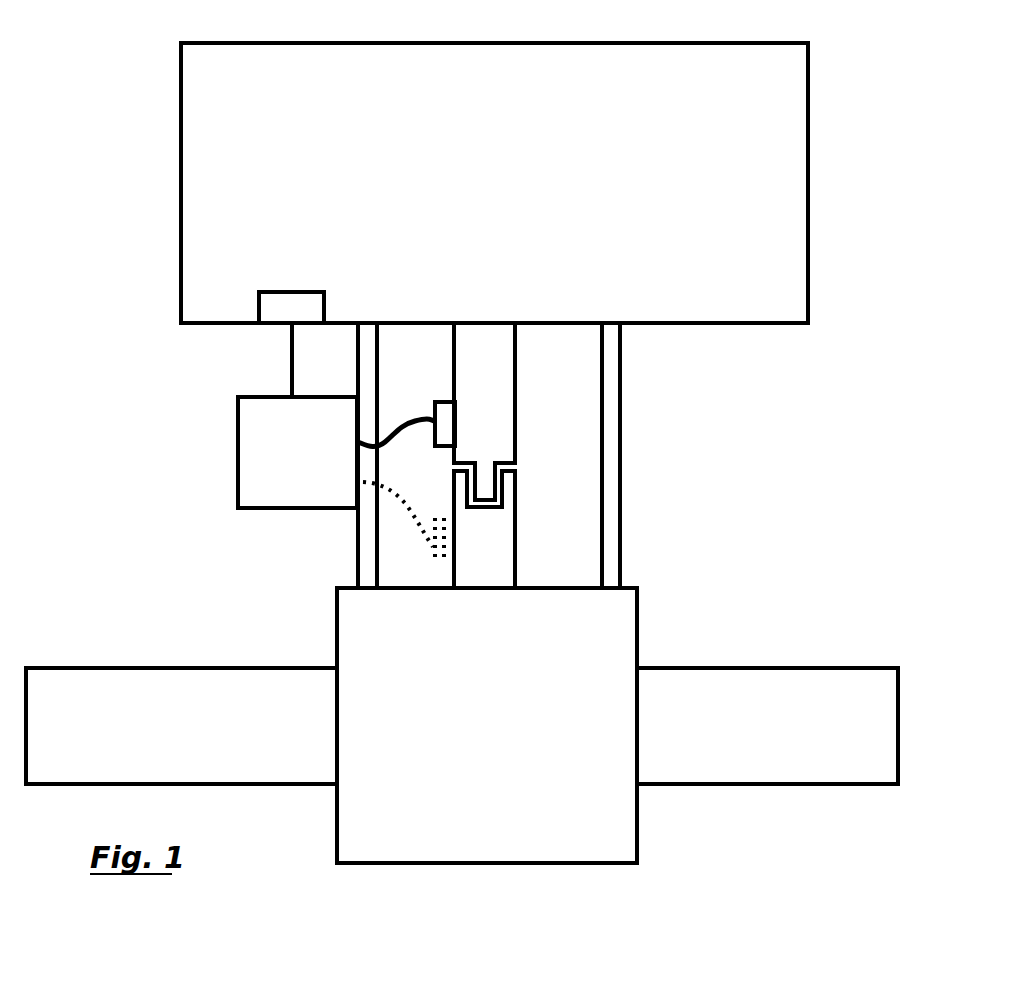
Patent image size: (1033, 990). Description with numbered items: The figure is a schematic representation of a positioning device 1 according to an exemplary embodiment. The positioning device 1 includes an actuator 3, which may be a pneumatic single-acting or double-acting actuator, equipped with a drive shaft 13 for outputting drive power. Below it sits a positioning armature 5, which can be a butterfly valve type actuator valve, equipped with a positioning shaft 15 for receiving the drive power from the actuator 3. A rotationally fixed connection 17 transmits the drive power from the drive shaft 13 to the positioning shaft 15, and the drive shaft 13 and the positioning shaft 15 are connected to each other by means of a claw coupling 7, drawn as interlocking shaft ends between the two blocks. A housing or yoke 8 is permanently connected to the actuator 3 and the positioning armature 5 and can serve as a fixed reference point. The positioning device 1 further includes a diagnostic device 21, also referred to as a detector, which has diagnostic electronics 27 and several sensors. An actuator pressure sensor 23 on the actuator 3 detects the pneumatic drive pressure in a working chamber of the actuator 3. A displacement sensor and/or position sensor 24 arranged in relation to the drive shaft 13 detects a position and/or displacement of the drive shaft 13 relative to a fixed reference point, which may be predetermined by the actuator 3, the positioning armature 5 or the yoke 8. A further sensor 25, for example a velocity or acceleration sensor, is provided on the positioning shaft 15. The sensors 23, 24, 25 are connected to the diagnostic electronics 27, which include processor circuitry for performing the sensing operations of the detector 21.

The positioning device 1 is at (125, 213).
The actuator 3 is at (656, 171).
The positioning armature 5 is at (471, 732).
The claw coupling 7 is at (483, 488).
The housing or yoke 8 is at (370, 367).
The drive shaft 13 is at (487, 416).
The positioning shaft 15 is at (483, 563).
The rotationally fixed connection 17 is at (536, 453).
The diagnostic device 21 is at (212, 437).
The actuator pressure sensor 23 is at (283, 310).
The displacement sensor and/or position sensor 24 is at (444, 431).
The further sensor 25 is at (445, 550).
The diagnostic electronics 27 is at (301, 466).